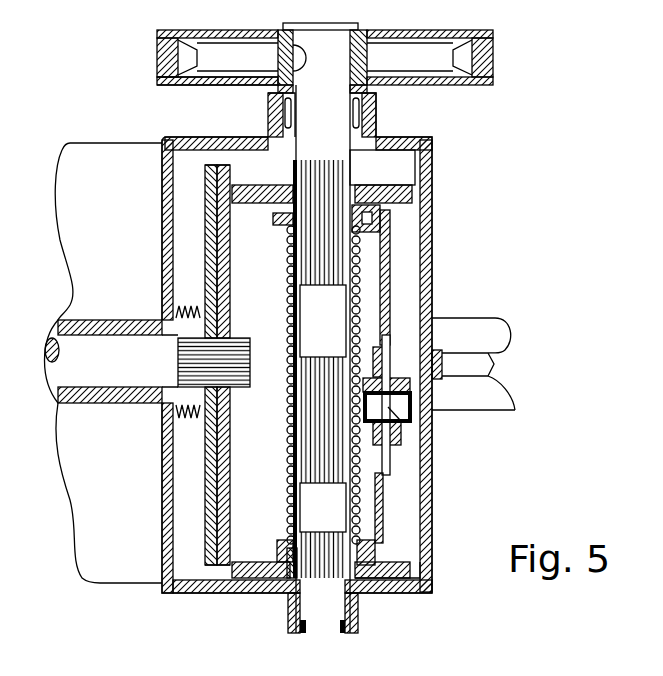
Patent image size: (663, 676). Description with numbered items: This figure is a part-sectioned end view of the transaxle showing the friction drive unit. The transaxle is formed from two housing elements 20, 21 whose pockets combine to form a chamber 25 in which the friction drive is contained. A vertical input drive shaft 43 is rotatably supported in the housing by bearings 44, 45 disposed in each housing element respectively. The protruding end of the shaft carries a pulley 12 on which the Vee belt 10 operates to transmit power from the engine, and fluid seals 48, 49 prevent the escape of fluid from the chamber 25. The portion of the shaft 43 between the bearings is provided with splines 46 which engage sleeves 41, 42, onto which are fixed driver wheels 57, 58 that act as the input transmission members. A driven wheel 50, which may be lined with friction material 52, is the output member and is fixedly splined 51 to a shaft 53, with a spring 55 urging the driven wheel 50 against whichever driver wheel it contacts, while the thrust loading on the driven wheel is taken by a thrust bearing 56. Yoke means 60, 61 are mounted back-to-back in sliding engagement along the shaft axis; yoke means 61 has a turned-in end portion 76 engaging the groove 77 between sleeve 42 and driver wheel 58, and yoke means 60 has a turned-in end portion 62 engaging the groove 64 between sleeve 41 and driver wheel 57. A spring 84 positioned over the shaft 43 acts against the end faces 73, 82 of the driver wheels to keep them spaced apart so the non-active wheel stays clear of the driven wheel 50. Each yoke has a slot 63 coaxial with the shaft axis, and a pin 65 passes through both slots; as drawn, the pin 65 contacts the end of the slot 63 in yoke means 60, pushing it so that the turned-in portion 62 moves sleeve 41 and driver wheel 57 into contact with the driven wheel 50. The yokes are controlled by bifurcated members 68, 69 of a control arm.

The Vee belt 10 is at (470, 58).
The pulley 12 is at (205, 85).
The housing element 20 is at (496, 337).
The housing element 21 is at (483, 394).
The chamber 25 is at (271, 273).
The sleeve 41 is at (293, 190).
The sleeve 42 is at (283, 540).
The input drive shaft 43 is at (331, 329).
The bearing 44 is at (360, 125).
The bearing 45 is at (358, 612).
The splines 46 is at (322, 428).
The fluid seal 48 is at (268, 100).
The fluid seal 49 is at (290, 622).
The driven wheel 50 is at (212, 462).
The spline 51 is at (200, 364).
The friction material 52 is at (212, 508).
The shaft 53 is at (104, 361).
The spring 55 is at (178, 432).
The thrust bearing 56 is at (178, 308).
The driver wheel 57 is at (410, 190).
The driver wheel 58 is at (422, 565).
The yoke means 60 is at (426, 280).
The yoke means 61 is at (375, 492).
The turned-in end portion 62 is at (372, 210).
The slot 63 is at (410, 455).
The groove 64 is at (290, 212).
The pin 65 is at (410, 412).
The bifurcated member 68 is at (430, 312).
The bifurcated member 69 is at (362, 390).
The end face 73 is at (385, 245).
The turned-in end portion 76 is at (372, 556).
The groove 77 is at (290, 555).
The end face 82 is at (380, 530).
The spring 84 is at (290, 318).